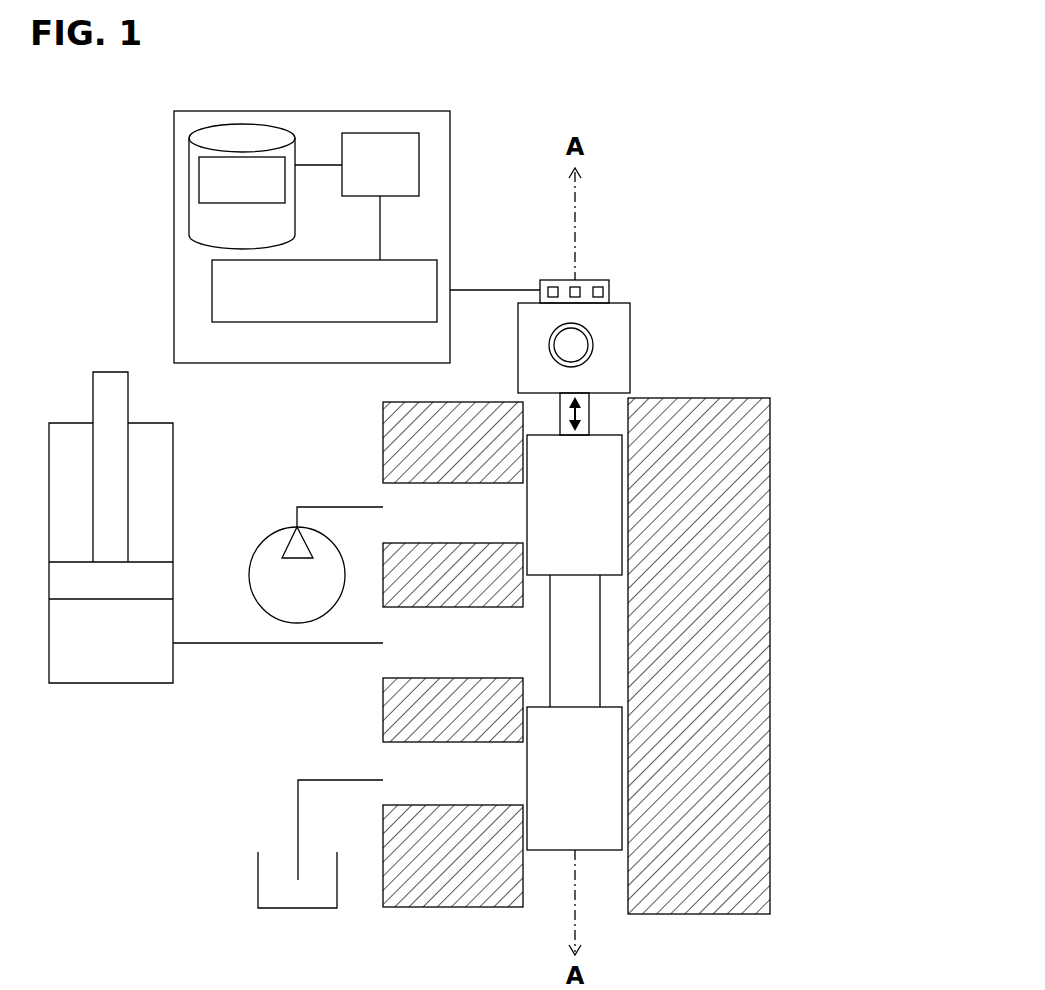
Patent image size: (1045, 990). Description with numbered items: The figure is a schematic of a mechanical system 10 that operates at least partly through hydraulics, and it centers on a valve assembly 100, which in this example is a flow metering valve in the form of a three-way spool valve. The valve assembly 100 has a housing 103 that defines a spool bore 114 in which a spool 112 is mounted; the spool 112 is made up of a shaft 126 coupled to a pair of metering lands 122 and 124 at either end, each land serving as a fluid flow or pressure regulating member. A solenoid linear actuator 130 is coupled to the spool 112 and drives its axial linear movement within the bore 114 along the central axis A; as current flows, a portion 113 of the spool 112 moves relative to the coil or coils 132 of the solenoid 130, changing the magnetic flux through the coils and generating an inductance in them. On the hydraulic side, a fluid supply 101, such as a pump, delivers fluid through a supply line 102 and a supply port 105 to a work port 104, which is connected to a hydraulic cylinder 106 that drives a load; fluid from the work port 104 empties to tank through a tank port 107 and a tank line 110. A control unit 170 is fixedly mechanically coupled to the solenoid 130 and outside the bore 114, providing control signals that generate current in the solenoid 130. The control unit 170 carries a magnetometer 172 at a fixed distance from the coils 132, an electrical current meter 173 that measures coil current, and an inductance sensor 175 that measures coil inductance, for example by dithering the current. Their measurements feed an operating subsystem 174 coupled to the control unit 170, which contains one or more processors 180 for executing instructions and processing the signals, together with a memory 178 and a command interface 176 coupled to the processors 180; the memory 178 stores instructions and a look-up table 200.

The mechanical system 10 is at (846, 162).
The valve assembly 100 is at (750, 322).
The fluid supply 101 is at (262, 540).
The supply line 102 is at (413, 500).
The housing 103 is at (717, 398).
The work port 104 is at (387, 653).
The supply port 105 is at (518, 528).
The hydraulic cylinder 106 is at (173, 485).
The tank port 107 is at (383, 755).
The tank line 110 is at (413, 785).
The spool 112 is at (522, 631).
The portion of the spool 113 is at (589, 425).
The spool bore 114 is at (612, 593).
The metering land 122 is at (550, 485).
The metering land 124 is at (550, 797).
The shaft 126 is at (585, 673).
The solenoid linear actuator 130 is at (630, 328).
The coil 132 is at (550, 350).
The control unit 170 is at (609, 300).
The magnetometer 172 is at (578, 286).
The electrical current meter 173 is at (601, 291).
The operating subsystem 174 is at (398, 111).
The inductance sensor 175 is at (553, 286).
The command interface 176 is at (304, 305).
The memory 178 is at (263, 236).
The processor 180 is at (401, 179).
The look-up table 200 is at (263, 194).